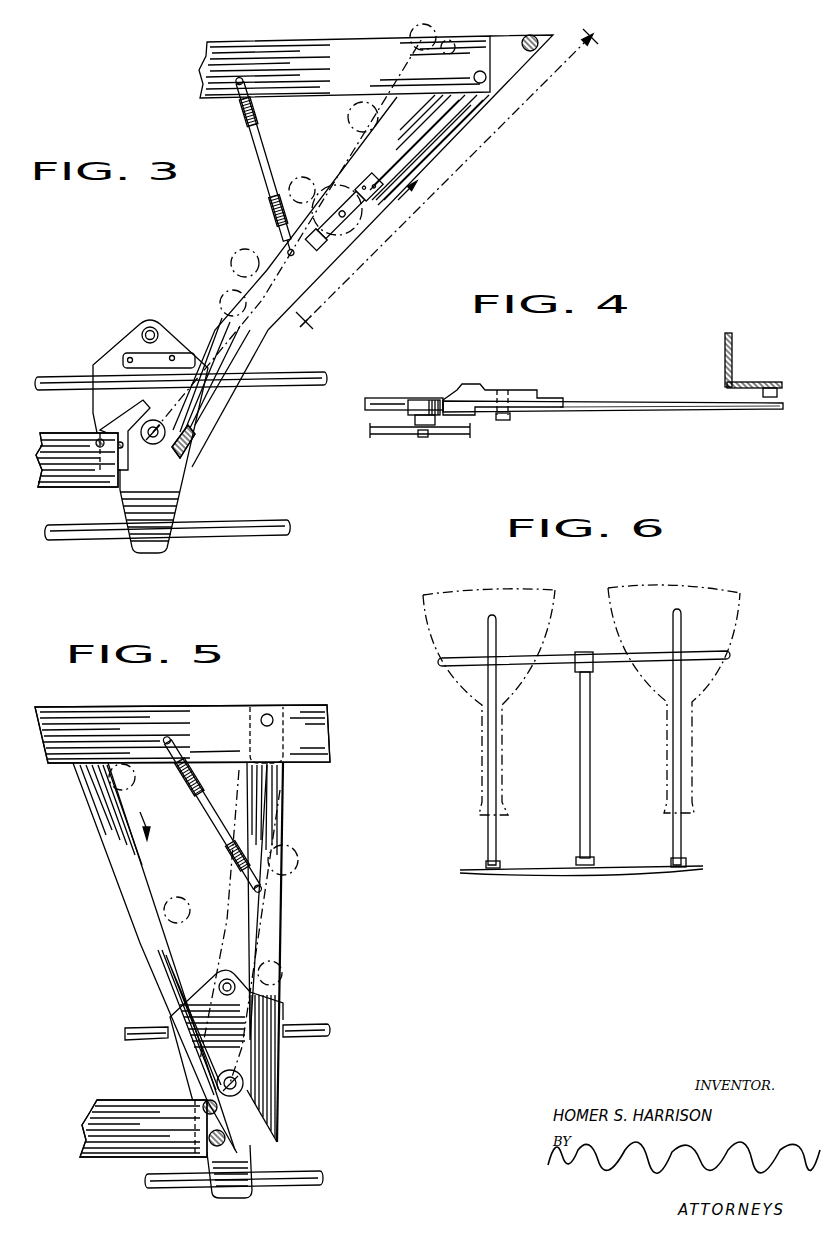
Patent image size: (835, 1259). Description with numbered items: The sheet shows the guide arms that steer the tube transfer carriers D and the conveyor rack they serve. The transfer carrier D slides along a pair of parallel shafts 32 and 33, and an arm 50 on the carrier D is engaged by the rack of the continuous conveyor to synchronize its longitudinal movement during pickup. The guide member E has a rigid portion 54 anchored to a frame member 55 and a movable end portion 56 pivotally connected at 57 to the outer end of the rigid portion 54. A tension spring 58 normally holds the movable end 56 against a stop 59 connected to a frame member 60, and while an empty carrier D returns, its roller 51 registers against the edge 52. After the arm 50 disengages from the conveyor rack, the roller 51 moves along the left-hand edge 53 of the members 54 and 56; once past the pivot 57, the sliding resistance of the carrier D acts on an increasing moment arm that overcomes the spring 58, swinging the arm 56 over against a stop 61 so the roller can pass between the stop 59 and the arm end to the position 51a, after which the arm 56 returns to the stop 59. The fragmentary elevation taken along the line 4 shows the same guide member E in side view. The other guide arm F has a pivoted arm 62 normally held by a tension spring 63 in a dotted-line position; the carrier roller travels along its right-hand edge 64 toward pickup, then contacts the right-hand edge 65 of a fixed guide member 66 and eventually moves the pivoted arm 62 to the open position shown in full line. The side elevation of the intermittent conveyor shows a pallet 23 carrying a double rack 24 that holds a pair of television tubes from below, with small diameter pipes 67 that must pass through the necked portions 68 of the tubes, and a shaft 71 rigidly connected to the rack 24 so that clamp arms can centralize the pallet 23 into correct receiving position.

In FIG. 3, the section line 4— 4 is at (447, 190).
In FIG. 6, the pallet 23 is at (620, 871).
In FIG. 6, the double rack 24 is at (603, 663).
In FIG. 3, the shaft 32 is at (257, 527).
In FIG. 5, the shaft 32 is at (283, 1175).
In FIG. 3, the shaft 33 is at (287, 382).
In FIG. 5, the shaft 33 is at (313, 1027).
In FIG. 3, the arm 50 is at (188, 355).
In FIG. 4, the roller 51 is at (425, 400).
In FIG. 3, the roller position 51a is at (153, 447).
In FIG. 5, the roller position 51a is at (230, 1070).
In FIG. 3, the edge 52 is at (320, 277).
In FIG. 4, the edge 52 is at (388, 404).
In FIG. 3, the left-hand edge 53 is at (318, 178).
In FIG. 3, the rigid portion 54 is at (443, 143).
In FIG. 4, the rigid portion 54 is at (648, 402).
In FIG. 3, the frame member 55 is at (307, 77).
In FIG. 4, the frame member 55 is at (738, 381).
In FIG. 5, the frame member 55 is at (230, 712).
In FIG. 3, the movable end portion 56 is at (215, 385).
In FIG. 3, the pivot 57 is at (348, 214).
In FIG. 4, the pivot 57 is at (507, 421).
In FIG. 3, the tension spring 58 is at (265, 160).
In FIG. 3, the stop 59 is at (118, 425).
In FIG. 3, the frame member 60 is at (52, 443).
In FIG. 5, the frame member 60 is at (122, 1112).
In FIG. 3, the stop 61 is at (188, 452).
In FIG. 5, the pivoted arm 62 is at (277, 923).
In FIG. 5, the tension spring 63 is at (210, 815).
In FIG. 5, the right-hand edge 64 is at (282, 963).
In FIG. 5, the right-hand edge 65 is at (150, 890).
In FIG. 5, the fixed guide member 66 is at (140, 943).
In FIG. 6, the small diameter pipe 67 is at (496, 852).
In FIG. 6, the necked portion 68 is at (500, 777).
In FIG. 6, the shaft 71 is at (588, 797).
In FIG. 3, the transfer carrier D is at (178, 493).
In FIG. 4, the transfer carrier D is at (450, 430).
In FIG. 5, the transfer carrier D is at (284, 1060).
In FIG. 3, the guide member E is at (347, 250).
In FIG. 5, the guide arm F is at (283, 892).